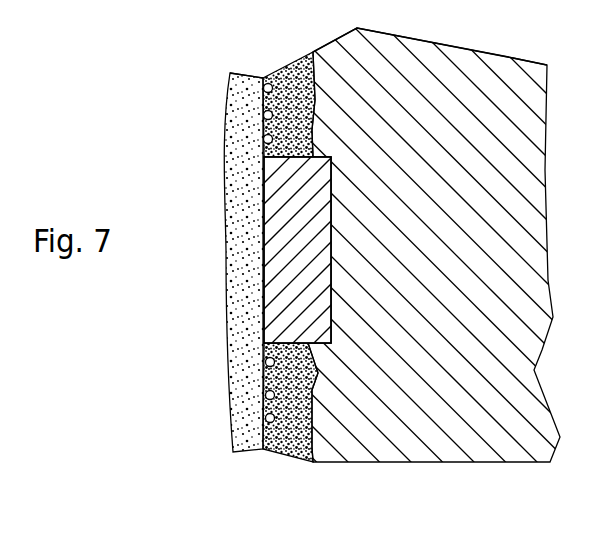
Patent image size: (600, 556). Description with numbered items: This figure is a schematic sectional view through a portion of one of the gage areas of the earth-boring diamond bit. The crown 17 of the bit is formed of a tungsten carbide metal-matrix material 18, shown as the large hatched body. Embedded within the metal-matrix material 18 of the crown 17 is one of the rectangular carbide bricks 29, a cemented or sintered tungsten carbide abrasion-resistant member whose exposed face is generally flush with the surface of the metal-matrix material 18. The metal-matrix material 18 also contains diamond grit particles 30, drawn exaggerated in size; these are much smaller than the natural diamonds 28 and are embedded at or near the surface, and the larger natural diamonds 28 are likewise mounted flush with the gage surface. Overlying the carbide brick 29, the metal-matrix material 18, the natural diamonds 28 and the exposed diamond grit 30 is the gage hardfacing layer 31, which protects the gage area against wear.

The crown 17 is at (365, 53).
The metal-matrix material 18 is at (432, 437).
The natural diamonds 28 is at (264, 115).
The carbide brick 29 is at (287, 212).
The diamond grit particles 30 is at (268, 382).
The gage hardfacing layer 31 is at (230, 308).